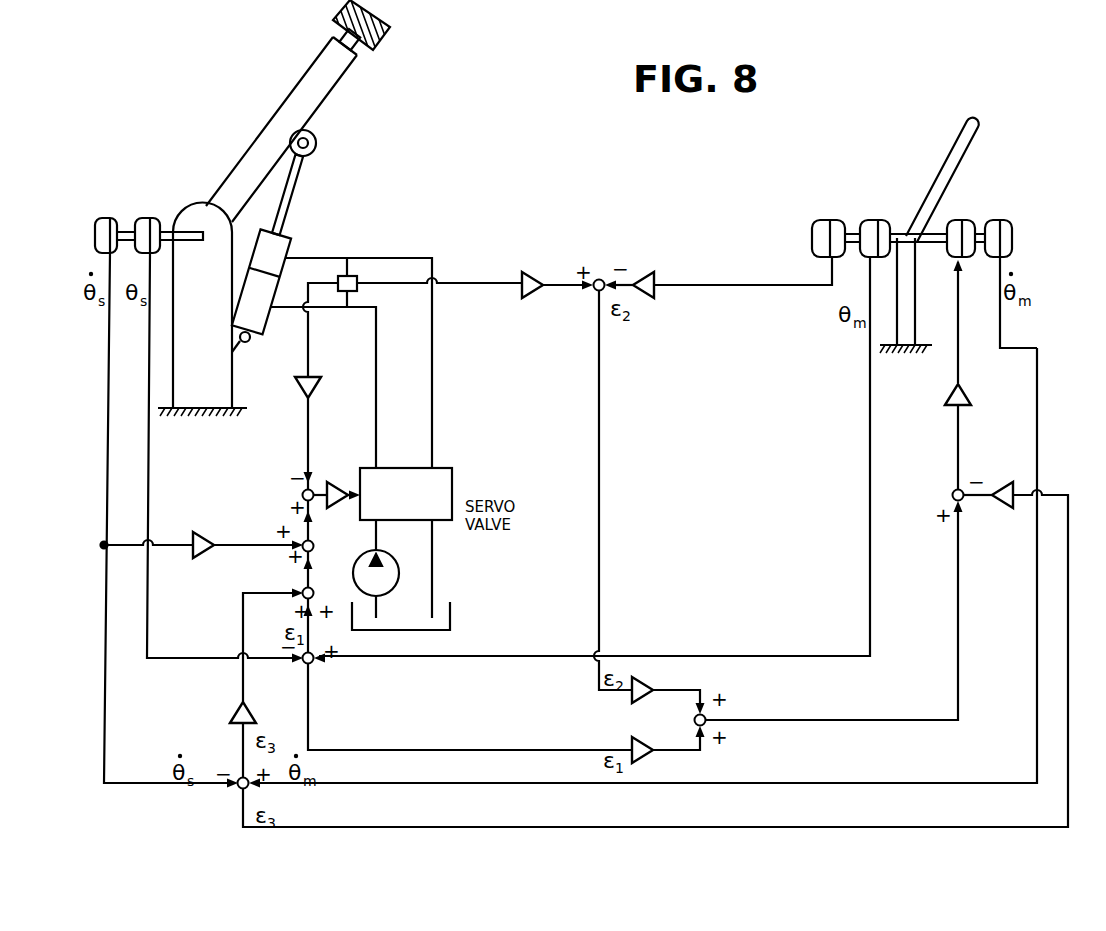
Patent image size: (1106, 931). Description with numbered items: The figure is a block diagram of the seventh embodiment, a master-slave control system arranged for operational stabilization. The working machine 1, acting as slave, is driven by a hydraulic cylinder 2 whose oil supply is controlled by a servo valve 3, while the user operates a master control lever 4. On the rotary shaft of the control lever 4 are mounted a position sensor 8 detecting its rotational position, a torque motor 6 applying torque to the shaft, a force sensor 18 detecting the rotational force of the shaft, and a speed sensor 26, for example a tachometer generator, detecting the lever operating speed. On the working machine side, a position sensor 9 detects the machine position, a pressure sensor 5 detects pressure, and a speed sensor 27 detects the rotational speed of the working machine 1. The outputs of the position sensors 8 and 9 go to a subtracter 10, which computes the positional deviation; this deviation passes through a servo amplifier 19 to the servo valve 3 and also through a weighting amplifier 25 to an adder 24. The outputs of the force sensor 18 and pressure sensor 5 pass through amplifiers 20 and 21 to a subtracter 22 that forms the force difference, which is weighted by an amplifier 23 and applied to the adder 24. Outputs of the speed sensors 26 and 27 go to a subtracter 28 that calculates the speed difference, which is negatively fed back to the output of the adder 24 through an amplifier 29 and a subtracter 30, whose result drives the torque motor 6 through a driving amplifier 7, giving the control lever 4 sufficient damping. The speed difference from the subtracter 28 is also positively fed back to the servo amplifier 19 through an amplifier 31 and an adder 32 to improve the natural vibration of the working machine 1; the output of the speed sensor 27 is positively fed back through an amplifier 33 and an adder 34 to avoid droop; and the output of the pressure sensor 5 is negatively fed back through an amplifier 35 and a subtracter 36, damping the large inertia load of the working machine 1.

The working machine 1 is at (320, 83).
The hydraulic cylinder 2 is at (298, 243).
The servo valve 3 is at (452, 495).
The control lever 4 is at (975, 143).
The pressure sensor 5 is at (350, 276).
The torque motor 6 is at (968, 225).
The driving amplifier 7 is at (973, 395).
The position sensor 8 is at (884, 222).
The position sensor 9 is at (152, 222).
The subtracter 10 is at (312, 663).
The force sensor 18 is at (832, 222).
The servo amplifier 19 is at (334, 482).
The amplifier 20 is at (645, 272).
The amplifier 21 is at (599, 280).
The subtracter 22 is at (535, 272).
The amplifier 23 is at (652, 688).
The adder 24 is at (694, 720).
The amplifier 25 is at (630, 744).
The speed sensor 26 is at (1012, 232).
The speed sensor 27 is at (113, 222).
The subtracter 28 is at (240, 792).
The amplifier 29 is at (1000, 505).
The subtracter 30 is at (952, 492).
The amplifier 31 is at (232, 712).
The adder 32 is at (313, 590).
The amplifier 33 is at (205, 534).
The adder 34 is at (313, 543).
The amplifier 35 is at (318, 388).
The subtracter 36 is at (302, 490).